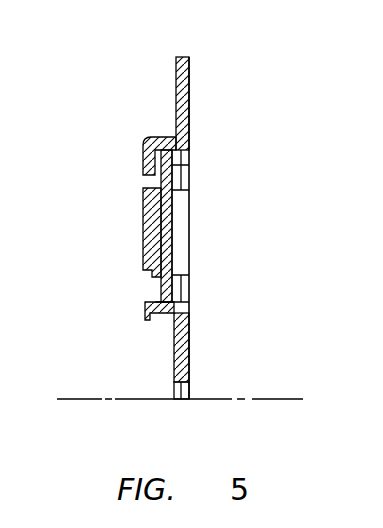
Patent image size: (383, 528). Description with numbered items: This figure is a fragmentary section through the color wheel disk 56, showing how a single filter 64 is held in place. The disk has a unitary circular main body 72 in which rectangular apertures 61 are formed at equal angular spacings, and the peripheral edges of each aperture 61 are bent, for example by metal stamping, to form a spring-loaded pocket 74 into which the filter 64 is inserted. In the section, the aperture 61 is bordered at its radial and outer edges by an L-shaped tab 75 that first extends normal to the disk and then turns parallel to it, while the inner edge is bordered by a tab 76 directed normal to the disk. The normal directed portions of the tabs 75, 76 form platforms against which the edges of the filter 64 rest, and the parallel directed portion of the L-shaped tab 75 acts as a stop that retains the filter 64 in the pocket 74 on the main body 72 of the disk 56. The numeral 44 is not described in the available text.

The base plane 44 is at (259, 399).
The color wheel disk 56 is at (191, 92).
The rectangular aperture 61 is at (184, 158).
The filter 64 is at (181, 220).
The main body 72 is at (189, 361).
The spring-loaded pocket 74 is at (119, 230).
The L-shaped tab 75 is at (143, 153).
The tab 76 is at (150, 316).